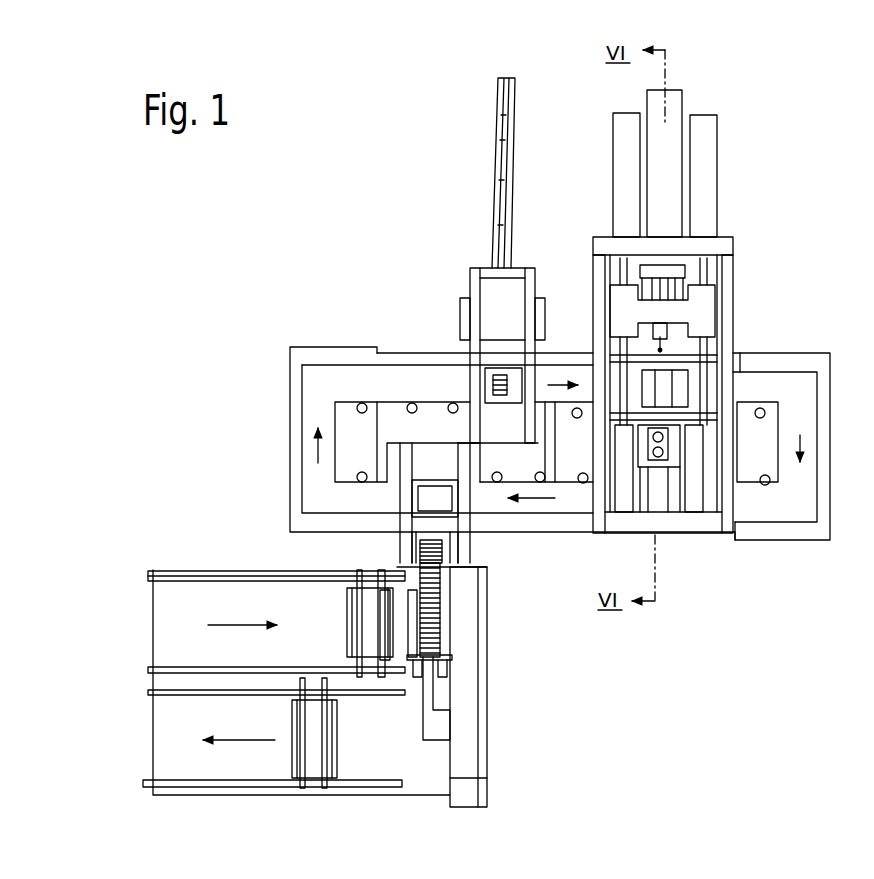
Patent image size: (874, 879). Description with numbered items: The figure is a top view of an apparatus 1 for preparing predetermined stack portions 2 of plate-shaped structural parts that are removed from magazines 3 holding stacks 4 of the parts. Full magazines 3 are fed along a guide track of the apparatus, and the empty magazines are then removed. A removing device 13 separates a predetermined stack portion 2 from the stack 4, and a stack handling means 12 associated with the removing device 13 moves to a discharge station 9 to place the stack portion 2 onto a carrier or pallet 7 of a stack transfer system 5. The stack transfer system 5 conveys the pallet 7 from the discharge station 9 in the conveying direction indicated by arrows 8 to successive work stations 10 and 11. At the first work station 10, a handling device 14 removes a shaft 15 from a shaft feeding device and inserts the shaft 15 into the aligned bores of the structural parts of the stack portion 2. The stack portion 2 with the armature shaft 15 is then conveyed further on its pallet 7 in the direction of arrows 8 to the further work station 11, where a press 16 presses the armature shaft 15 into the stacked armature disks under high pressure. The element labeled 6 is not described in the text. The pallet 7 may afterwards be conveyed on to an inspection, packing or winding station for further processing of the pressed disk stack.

The apparatus 1 is at (553, 592).
The stack portion 2 is at (512, 385).
The magazine 3 is at (340, 630).
The stack 4 is at (432, 605).
The stack transfer system 5 is at (372, 340).
The beam 6 is at (420, 370).
The carrier 7 is at (490, 380).
The arrows 8 is at (800, 440).
The discharge station 9 is at (390, 428).
The work station 10 is at (548, 432).
The work station 11 is at (733, 458).
The stack handling means 12 is at (392, 493).
The removing device 13 is at (414, 553).
The handling device 14 is at (465, 286).
The shaft 15 is at (510, 120).
The press 16 is at (745, 210).